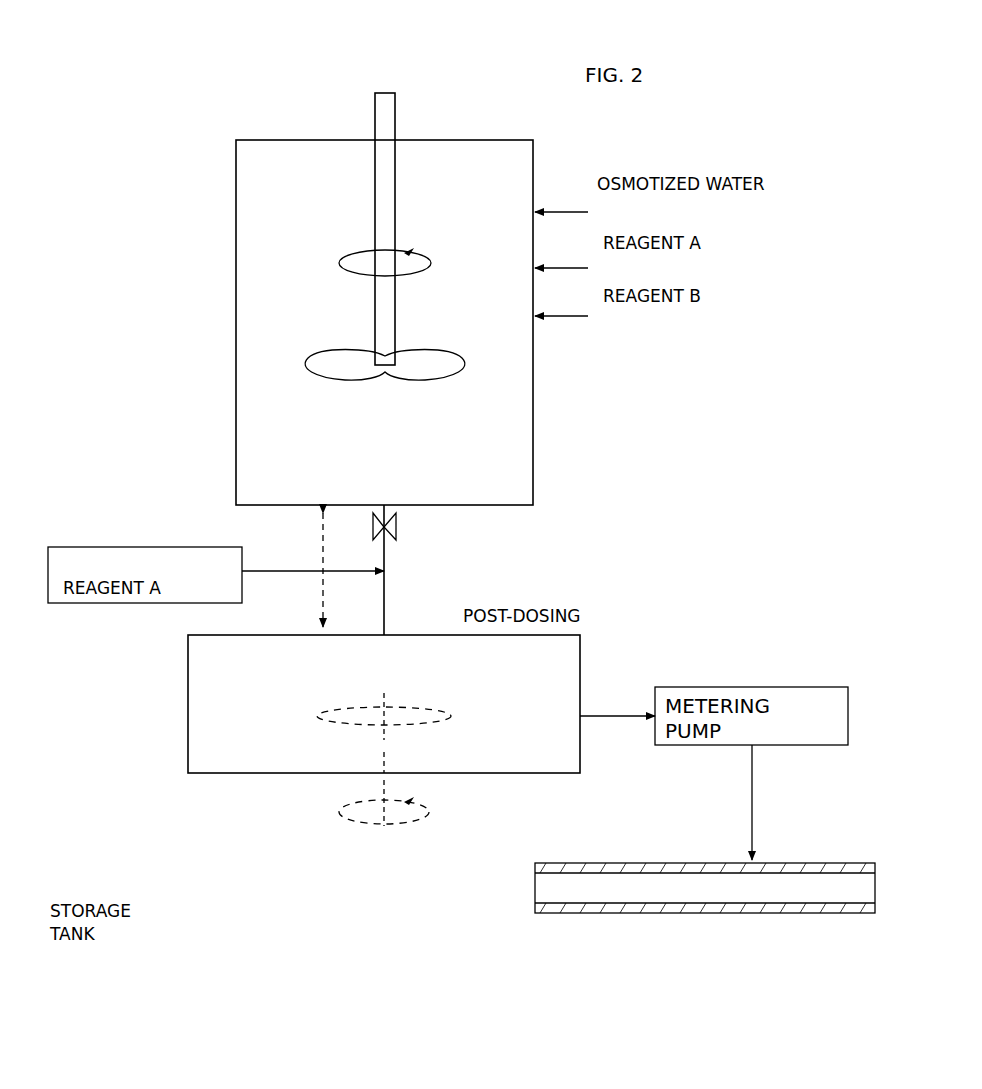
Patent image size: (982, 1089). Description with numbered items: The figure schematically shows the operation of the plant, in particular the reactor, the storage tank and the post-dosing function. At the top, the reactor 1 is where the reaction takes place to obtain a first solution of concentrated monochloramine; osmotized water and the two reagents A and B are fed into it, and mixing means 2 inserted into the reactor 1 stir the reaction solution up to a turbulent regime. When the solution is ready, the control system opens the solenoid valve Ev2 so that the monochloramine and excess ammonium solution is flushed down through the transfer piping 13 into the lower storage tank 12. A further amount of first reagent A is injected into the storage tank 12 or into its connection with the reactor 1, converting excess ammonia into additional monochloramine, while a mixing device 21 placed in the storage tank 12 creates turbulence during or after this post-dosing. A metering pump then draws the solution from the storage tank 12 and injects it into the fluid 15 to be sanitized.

The reactor 1 is at (207, 362).
The mixing means 2 is at (360, 168).
The storage tank 12 is at (188, 723).
The transfer piping 13 is at (385, 591).
The fluid 15 is at (657, 888).
The mixing device 21 is at (384, 752).
The solenoid valve Ev2 is at (397, 531).